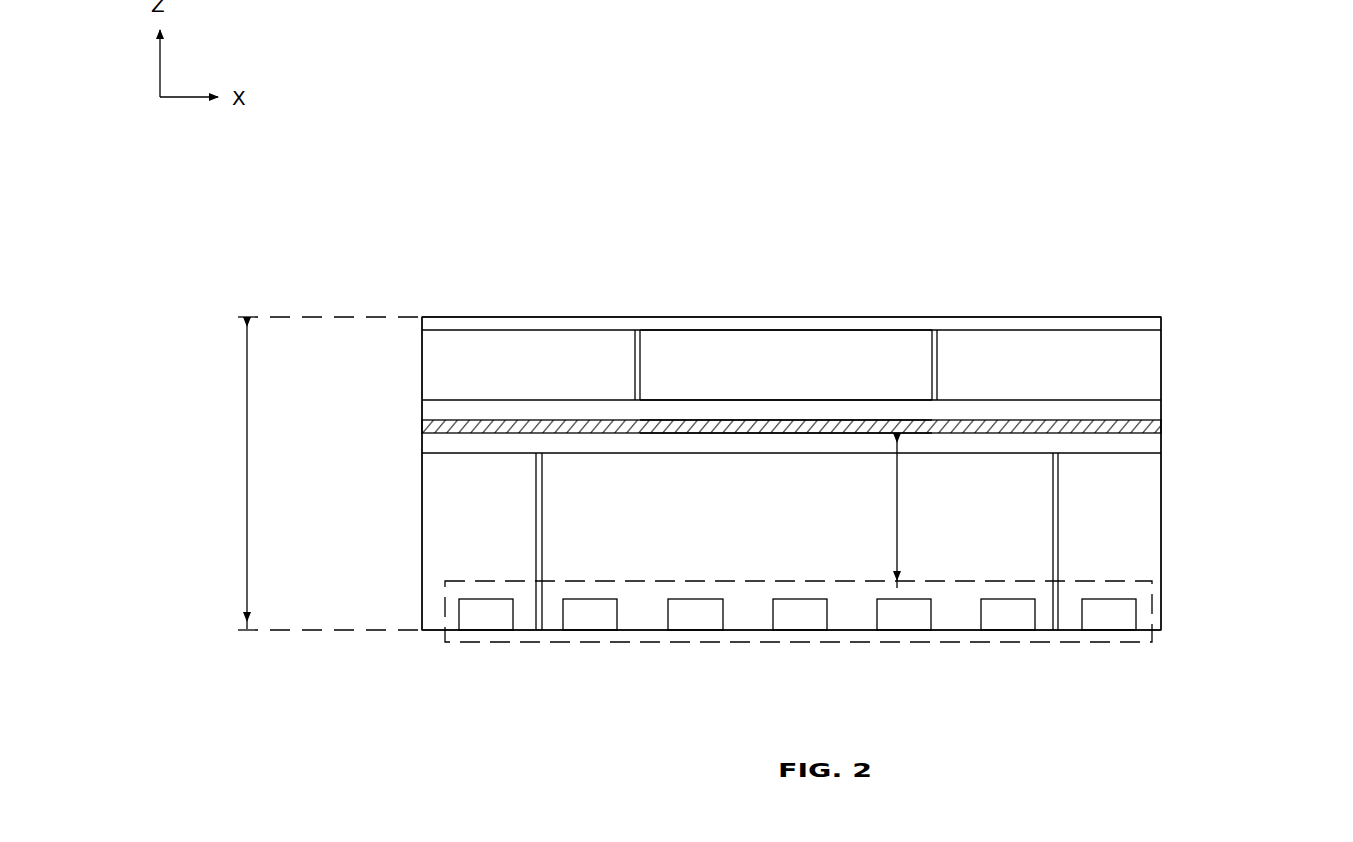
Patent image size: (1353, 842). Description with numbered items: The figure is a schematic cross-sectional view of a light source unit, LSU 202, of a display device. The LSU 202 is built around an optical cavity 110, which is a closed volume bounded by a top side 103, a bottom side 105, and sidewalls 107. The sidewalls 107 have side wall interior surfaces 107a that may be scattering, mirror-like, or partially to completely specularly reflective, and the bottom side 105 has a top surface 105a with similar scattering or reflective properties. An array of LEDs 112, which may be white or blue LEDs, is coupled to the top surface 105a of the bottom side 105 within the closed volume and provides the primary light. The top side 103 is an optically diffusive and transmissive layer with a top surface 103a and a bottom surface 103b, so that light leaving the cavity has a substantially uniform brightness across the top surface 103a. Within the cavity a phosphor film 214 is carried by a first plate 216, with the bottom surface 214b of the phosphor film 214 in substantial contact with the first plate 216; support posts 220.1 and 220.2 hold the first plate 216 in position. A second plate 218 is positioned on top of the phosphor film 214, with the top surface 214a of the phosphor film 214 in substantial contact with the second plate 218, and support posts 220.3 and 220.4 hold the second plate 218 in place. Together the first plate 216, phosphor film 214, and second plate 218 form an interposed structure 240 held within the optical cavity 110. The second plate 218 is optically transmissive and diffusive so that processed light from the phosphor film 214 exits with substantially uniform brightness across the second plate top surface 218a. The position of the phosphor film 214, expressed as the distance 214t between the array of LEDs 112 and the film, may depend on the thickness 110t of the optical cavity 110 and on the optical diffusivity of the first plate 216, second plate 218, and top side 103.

The light source unit (LSU) 202 is at (1160, 187).
The top side 103 is at (452, 322).
The top surface of top side 103a is at (806, 300).
The bottom surface of top side 103b is at (657, 330).
The sidewalls 107 is at (419, 525).
The side wall interior surfaces 107a is at (422, 372).
The optical cavity 110 is at (1170, 366).
The thickness of optical cavity 110t is at (248, 480).
The array of LEDs 112 is at (1075, 578).
The bottom side 105 is at (525, 640).
The top surface of bottom side 105a is at (437, 630).
The phosphor film 214 is at (1157, 426).
The top surface of phosphor film 214a is at (652, 408).
The bottom surface of phosphor film 214b is at (738, 433).
The distance between array of LEDs and phosphor film 214t is at (898, 545).
The first plate 216 is at (1152, 444).
The second plate 218 is at (1150, 408).
The second plate top surface 218a is at (790, 385).
The support post 220.1 is at (548, 503).
The support post 220.2 is at (1050, 498).
The support post 220.3 is at (633, 352).
The support post 220.4 is at (940, 360).
The interposed structure 240 is at (877, 433).